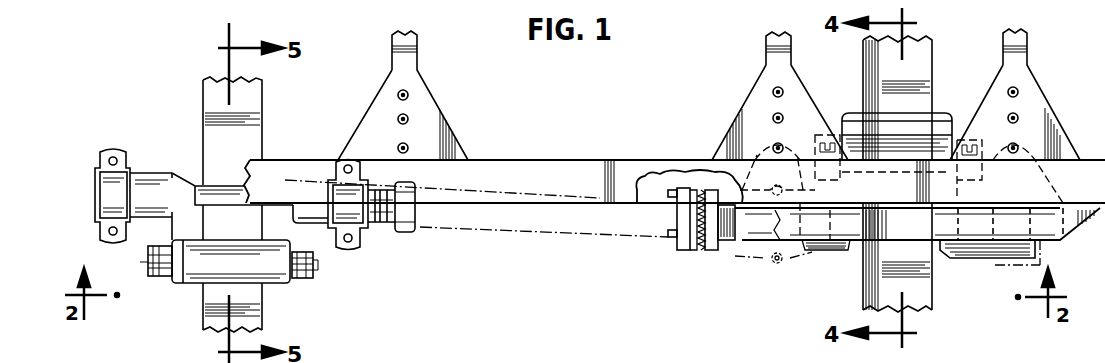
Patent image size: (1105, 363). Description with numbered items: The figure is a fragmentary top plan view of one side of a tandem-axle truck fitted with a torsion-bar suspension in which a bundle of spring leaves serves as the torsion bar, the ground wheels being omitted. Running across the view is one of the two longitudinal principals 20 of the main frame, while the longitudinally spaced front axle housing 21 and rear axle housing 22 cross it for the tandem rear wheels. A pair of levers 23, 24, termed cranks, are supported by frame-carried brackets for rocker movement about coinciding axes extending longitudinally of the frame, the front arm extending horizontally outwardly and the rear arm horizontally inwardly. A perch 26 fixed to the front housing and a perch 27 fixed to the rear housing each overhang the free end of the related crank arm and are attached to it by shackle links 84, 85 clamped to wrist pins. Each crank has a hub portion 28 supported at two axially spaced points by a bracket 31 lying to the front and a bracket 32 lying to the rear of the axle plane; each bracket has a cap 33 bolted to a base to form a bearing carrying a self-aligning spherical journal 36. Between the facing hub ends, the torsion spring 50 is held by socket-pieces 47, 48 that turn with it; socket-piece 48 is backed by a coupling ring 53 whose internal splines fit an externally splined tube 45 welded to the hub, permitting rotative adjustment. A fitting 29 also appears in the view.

The longitudinal principal 20 is at (564, 170).
The front axle housing 21 is at (262, 97).
The rear axle housing 22 is at (922, 294).
The lever 23 is at (181, 172).
The lever 24 is at (835, 252).
The perch 26 is at (190, 284).
The perch 27 is at (946, 112).
The hub portion 28 is at (158, 172).
The fitting 29 is at (978, 256).
The bracket 31 is at (741, 265).
The bracket 32 is at (1048, 249).
The cap 33 is at (105, 164).
The self-aligning spherical journal 36 is at (92, 218).
The externally splined tube 45 is at (742, 236).
The socket-piece 47 is at (410, 235).
The socket-piece 48 is at (680, 251).
The torsion spring 50 is at (556, 237).
The coupling ring 53 is at (702, 251).
The link 84 is at (303, 280).
The link 85 is at (156, 278).